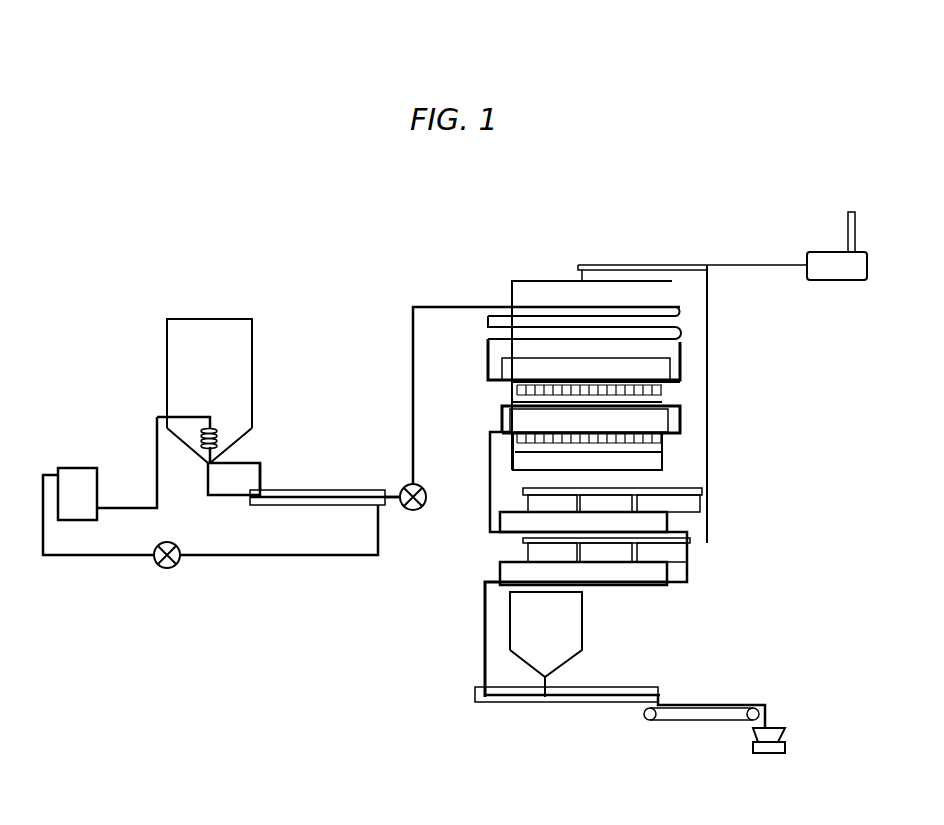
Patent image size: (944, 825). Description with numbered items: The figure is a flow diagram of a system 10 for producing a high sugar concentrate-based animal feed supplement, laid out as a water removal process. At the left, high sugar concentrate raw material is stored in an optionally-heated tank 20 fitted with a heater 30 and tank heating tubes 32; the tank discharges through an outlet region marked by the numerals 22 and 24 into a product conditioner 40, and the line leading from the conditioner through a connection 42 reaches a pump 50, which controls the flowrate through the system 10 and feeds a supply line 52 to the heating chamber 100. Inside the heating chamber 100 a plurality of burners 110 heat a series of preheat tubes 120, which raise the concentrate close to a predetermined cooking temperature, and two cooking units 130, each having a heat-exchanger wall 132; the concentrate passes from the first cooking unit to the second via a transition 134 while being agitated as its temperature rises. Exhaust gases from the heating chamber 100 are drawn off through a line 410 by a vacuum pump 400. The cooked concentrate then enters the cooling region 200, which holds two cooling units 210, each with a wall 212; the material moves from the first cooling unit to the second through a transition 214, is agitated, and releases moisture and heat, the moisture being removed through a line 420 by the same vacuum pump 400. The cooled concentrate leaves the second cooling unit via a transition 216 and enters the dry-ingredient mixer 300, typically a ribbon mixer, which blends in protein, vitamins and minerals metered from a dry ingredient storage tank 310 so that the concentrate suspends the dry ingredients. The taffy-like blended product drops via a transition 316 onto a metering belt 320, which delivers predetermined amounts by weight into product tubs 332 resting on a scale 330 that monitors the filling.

The system 10 is at (146, 279).
The tank 20 is at (209, 391).
The feeder 22 is at (207, 487).
The feeder outlet 24 is at (264, 473).
The heater 30 is at (210, 492).
The tank heating tubes 32 is at (216, 437).
The product conditioner 40 is at (340, 489).
The valve inlet 42 is at (403, 490).
The pump 50 is at (414, 511).
The supply pipe 52 is at (412, 412).
The heating chamber 100 is at (542, 280).
The burners 110 is at (512, 397).
The preheat tubes 120 is at (655, 305).
The cooking unit 130 is at (586, 395).
The heat-exchanger wall 132 is at (680, 350).
The transition 134 is at (682, 400).
The cooling region 200 is at (795, 503).
The cooling unit 210 is at (515, 521).
The wall 212 is at (500, 522).
The transition 214 is at (690, 560).
The transition 216 is at (485, 636).
The dry-ingredient mixer 300 is at (618, 686).
The dry ingredient storage tank 310 is at (583, 623).
The transition 316 is at (660, 704).
The metering belt 320 is at (672, 721).
The scale 330 is at (765, 755).
The product tubs 332 is at (787, 736).
The vacuum pump 400 is at (837, 246).
The line 410 is at (752, 272).
The line 420 is at (709, 483).